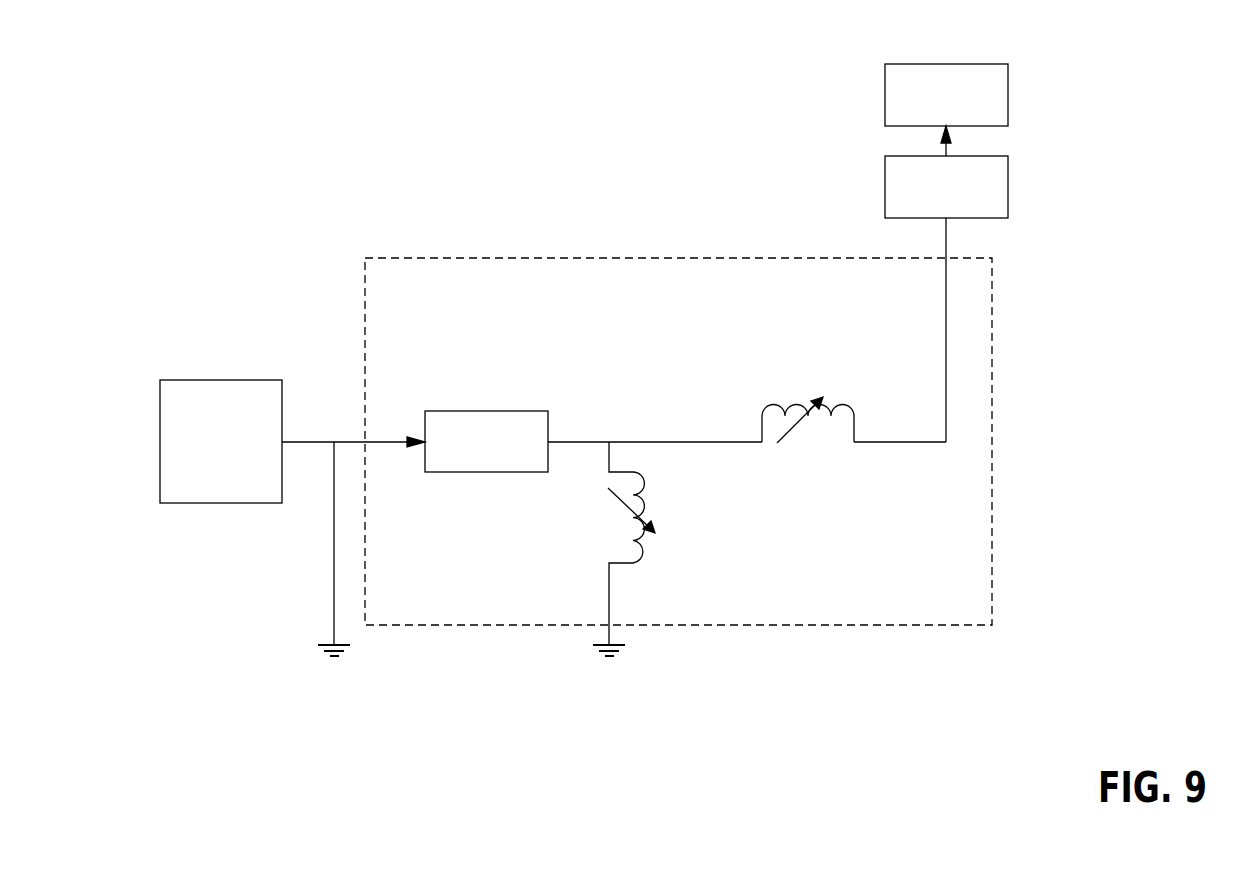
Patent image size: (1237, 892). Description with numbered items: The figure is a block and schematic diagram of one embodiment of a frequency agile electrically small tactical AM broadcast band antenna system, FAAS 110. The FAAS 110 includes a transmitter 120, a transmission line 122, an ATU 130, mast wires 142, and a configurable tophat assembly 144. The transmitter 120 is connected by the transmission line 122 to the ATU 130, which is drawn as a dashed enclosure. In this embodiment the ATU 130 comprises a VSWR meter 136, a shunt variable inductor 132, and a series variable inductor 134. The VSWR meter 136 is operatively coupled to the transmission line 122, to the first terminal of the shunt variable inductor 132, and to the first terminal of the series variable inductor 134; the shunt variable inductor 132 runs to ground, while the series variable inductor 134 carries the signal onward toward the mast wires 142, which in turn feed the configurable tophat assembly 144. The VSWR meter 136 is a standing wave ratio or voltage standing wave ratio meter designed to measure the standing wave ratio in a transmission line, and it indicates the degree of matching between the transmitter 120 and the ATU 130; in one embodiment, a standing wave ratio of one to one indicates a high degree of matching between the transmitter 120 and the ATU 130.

The FAAS 110 is at (1020, 709).
The transmitter 120 is at (218, 402).
The transmission line 122 is at (323, 437).
The ATU 130 is at (967, 601).
The shunt variable inductor 132 is at (622, 565).
The series variable inductor 134 is at (762, 422).
The VSWR meter 136 is at (443, 410).
The mast wires 142 is at (988, 210).
The configurable tophat assembly 144 is at (975, 70).